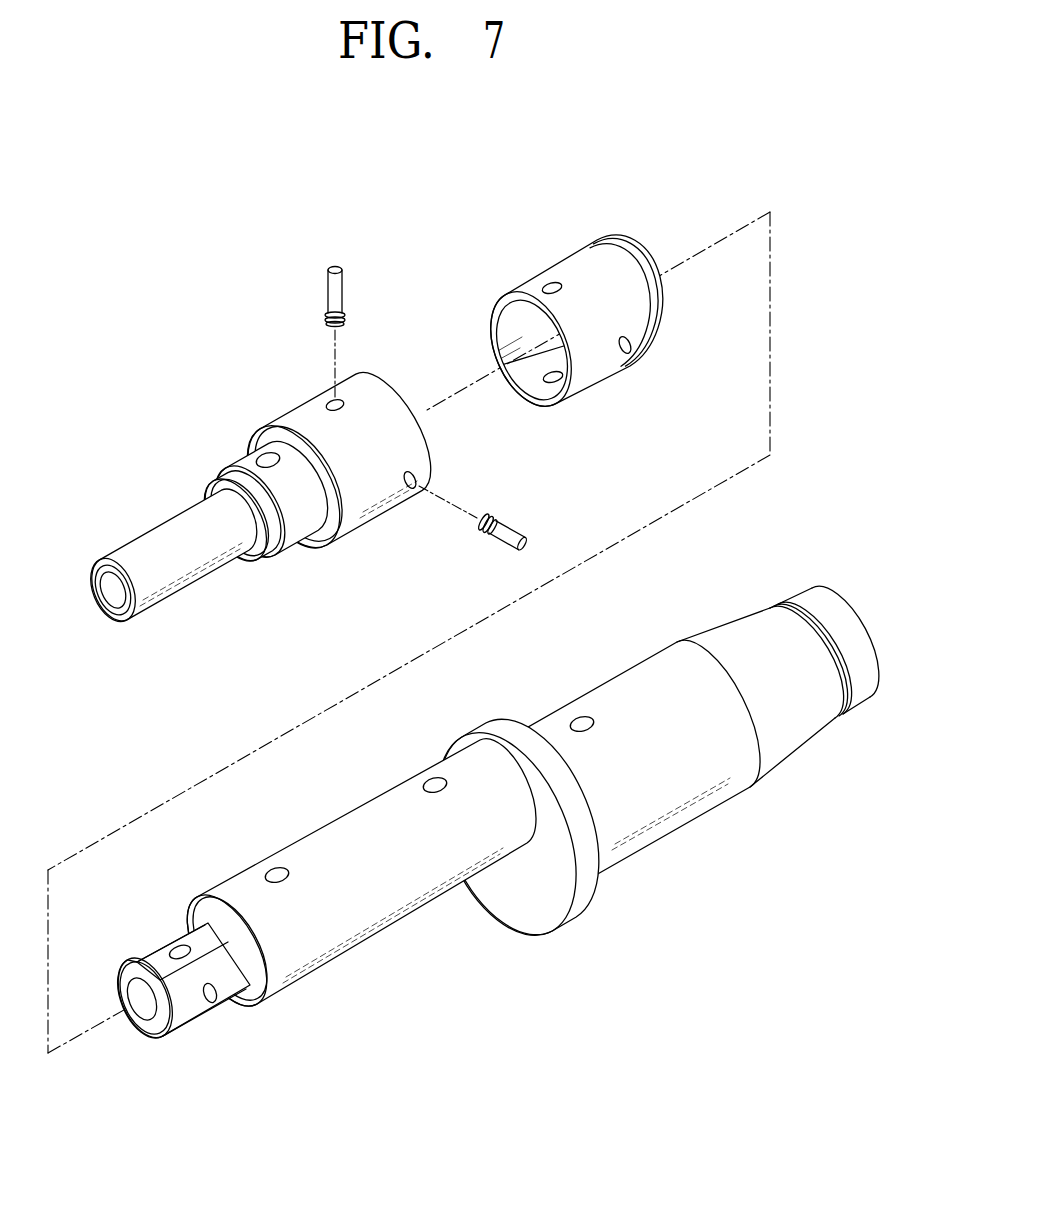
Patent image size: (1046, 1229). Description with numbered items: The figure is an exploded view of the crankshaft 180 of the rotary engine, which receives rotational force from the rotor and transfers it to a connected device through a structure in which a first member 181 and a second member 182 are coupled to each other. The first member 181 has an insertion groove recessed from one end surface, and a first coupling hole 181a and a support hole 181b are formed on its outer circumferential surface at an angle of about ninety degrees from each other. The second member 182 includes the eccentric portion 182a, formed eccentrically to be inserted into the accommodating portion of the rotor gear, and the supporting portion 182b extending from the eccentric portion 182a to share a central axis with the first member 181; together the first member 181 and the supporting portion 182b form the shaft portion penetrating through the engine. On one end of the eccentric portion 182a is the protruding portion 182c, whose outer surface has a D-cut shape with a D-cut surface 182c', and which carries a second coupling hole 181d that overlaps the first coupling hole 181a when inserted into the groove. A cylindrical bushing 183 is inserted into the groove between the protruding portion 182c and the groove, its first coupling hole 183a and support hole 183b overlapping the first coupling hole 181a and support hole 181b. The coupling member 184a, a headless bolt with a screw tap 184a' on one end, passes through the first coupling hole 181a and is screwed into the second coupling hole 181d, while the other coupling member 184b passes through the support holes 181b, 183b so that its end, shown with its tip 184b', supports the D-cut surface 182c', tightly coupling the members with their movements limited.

The crankshaft 180 is at (118, 275).
The first member 181 is at (304, 475).
The first coupling hole 181a is at (416, 479).
The support hole 181b is at (333, 401).
The second coupling hole 181d is at (183, 1016).
The second member 182 is at (485, 846).
The eccentric portion 182a is at (393, 923).
The supporting portion 182b is at (681, 820).
The protruding portion 182c is at (191, 990).
The D-cut surface 182c' is at (142, 917).
The bushing 183 is at (584, 308).
The first coupling hole 183a is at (628, 349).
The support hole 183b is at (553, 285).
The coupling member 184a is at (448, 547).
The screw tap 184a' is at (488, 524).
The coupling member 184b is at (282, 314).
The retaining ring of top pin 184b' is at (282, 300).